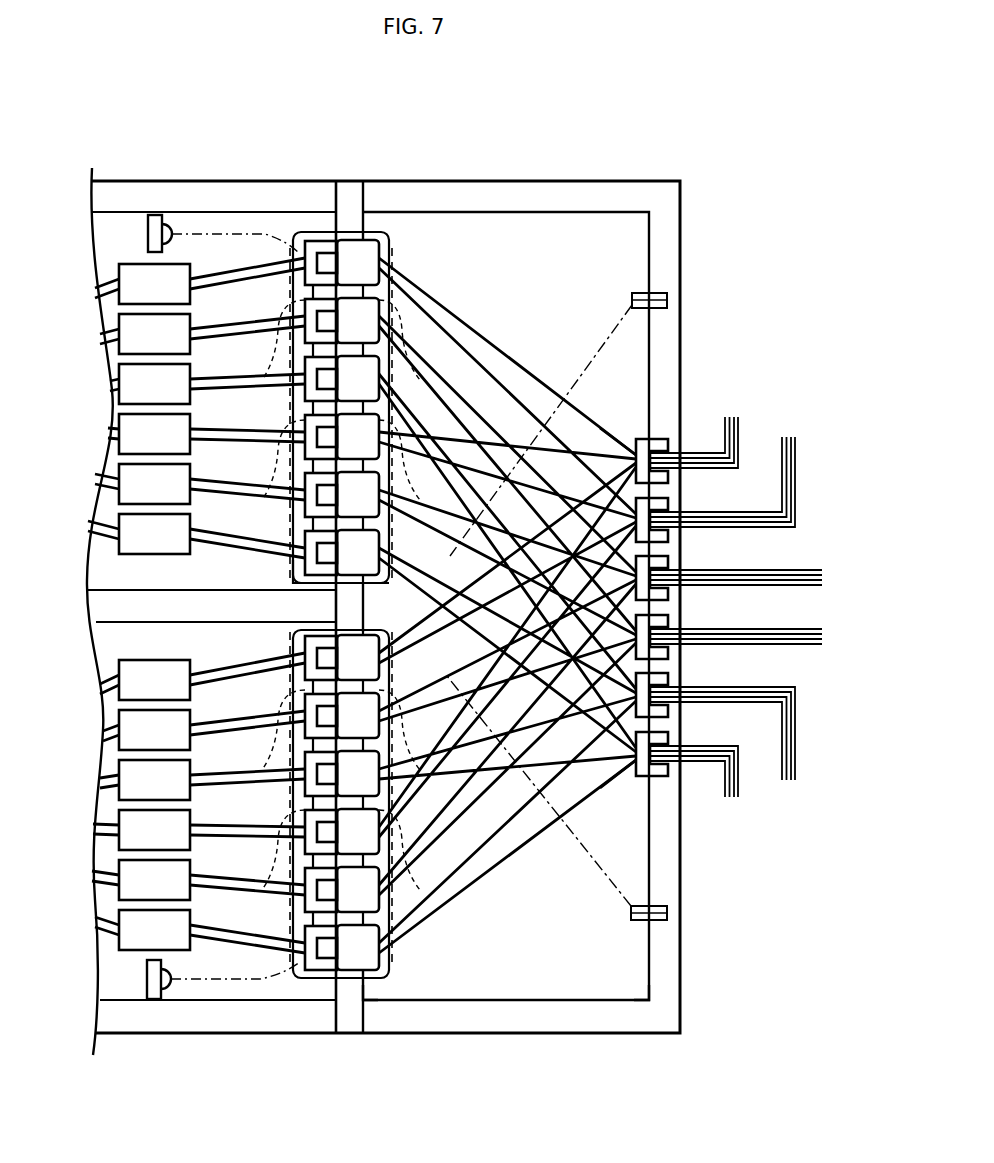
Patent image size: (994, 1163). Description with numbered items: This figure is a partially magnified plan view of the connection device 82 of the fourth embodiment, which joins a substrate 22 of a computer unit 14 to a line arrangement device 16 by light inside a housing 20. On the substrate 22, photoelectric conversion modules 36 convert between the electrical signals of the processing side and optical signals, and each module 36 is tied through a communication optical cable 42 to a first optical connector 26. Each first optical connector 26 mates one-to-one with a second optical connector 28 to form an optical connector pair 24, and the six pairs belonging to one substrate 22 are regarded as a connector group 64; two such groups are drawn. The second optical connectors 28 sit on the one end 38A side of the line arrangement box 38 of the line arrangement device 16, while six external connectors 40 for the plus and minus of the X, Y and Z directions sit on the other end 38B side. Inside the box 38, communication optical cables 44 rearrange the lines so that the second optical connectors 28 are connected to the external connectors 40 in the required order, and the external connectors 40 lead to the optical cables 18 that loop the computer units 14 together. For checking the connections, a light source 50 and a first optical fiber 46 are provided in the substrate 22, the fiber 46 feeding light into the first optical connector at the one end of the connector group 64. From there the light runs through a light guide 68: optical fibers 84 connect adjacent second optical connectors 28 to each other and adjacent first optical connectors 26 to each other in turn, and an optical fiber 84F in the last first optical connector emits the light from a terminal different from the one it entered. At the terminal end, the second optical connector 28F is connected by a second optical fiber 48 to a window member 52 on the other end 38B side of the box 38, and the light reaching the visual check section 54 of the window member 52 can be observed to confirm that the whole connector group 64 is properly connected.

The computer unit 14 is at (120, 1046).
The line arrangement device 16 is at (500, 1036).
The optical cable 18 is at (791, 455).
The housing 20 is at (180, 1036).
The substrate 22 is at (120, 210).
The optical connector pair 24 is at (382, 105).
The first optical connector 26 is at (318, 605).
The second optical connector 28 is at (364, 200).
The second optical connector at other end 28F is at (360, 590).
The photoelectric conversion module 36 is at (136, 264).
The line arrangement box 38 is at (567, 1004).
The one end of line arrangement box 38A is at (368, 1002).
The other end of line arrangement box 38B is at (652, 987).
The external connector 40 is at (664, 438).
The communication optical cable 42 is at (256, 270).
The communication optical cable 44 is at (598, 430).
The first optical fiber 46 is at (225, 236).
The second optical fiber 48 is at (592, 352).
The light source 50 is at (150, 214).
The window member 52 is at (660, 292).
The visual check section 54 is at (668, 300).
The connector group 64 is at (394, 230).
The light guide 68 is at (428, 263).
The connection device 82 is at (430, 128).
The optical fiber 84 is at (242, 430).
The optical fiber 84F is at (290, 585).